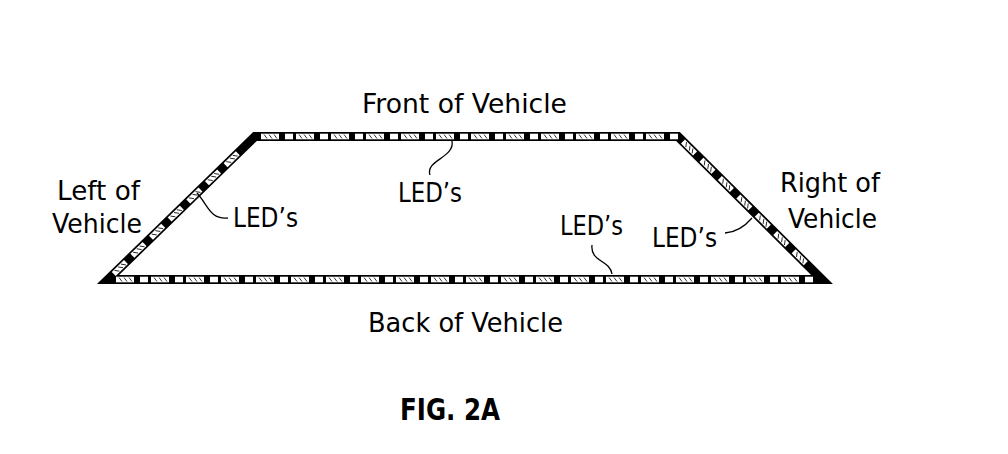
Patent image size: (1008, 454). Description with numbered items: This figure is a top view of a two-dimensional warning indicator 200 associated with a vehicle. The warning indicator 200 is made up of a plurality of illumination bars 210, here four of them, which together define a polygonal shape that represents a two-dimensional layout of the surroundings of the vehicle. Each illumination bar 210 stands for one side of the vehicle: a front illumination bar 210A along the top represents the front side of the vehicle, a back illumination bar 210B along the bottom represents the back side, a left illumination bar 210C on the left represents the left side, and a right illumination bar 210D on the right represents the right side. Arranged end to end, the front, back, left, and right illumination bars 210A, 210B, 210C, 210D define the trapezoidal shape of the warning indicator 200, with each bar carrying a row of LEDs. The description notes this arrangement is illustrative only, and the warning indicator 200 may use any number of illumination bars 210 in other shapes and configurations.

The warning indicator 200 is at (467, 178).
The illumination bar 210 is at (678, 285).
The front illumination bar 210A is at (312, 132).
The back illumination bar 210B is at (300, 284).
The left illumination bar 210C is at (213, 167).
The right illumination bar 210D is at (707, 165).